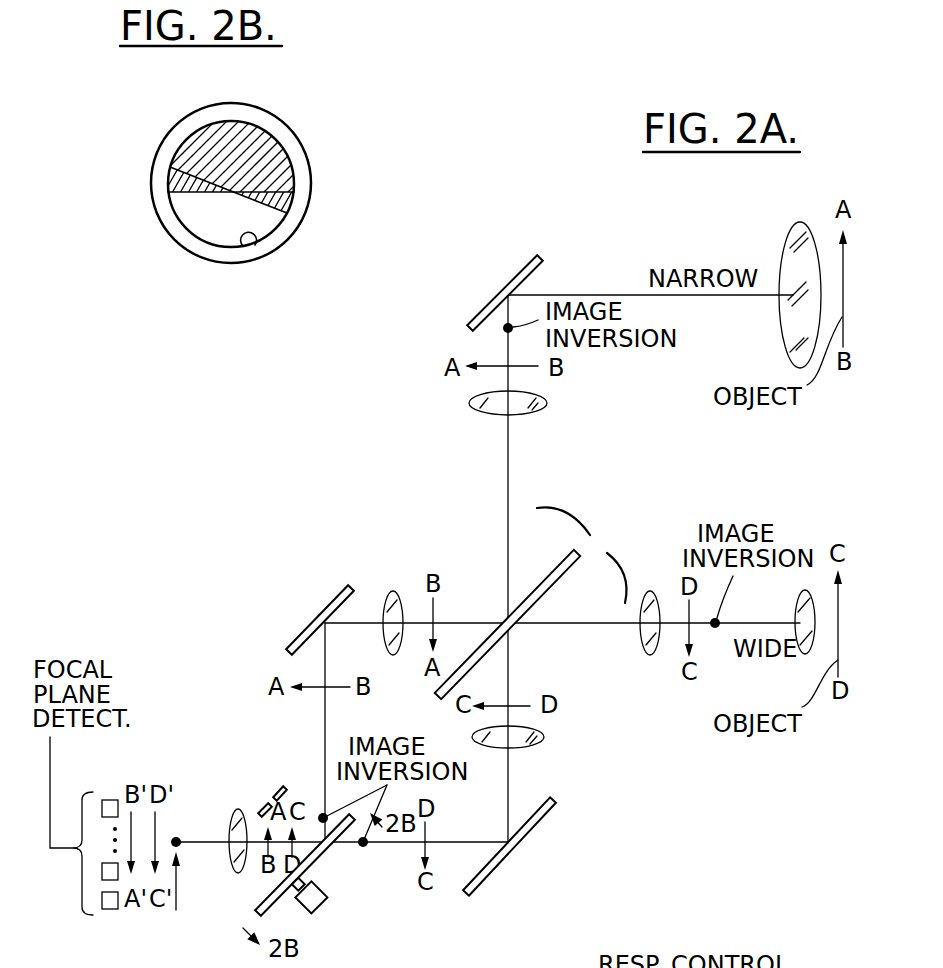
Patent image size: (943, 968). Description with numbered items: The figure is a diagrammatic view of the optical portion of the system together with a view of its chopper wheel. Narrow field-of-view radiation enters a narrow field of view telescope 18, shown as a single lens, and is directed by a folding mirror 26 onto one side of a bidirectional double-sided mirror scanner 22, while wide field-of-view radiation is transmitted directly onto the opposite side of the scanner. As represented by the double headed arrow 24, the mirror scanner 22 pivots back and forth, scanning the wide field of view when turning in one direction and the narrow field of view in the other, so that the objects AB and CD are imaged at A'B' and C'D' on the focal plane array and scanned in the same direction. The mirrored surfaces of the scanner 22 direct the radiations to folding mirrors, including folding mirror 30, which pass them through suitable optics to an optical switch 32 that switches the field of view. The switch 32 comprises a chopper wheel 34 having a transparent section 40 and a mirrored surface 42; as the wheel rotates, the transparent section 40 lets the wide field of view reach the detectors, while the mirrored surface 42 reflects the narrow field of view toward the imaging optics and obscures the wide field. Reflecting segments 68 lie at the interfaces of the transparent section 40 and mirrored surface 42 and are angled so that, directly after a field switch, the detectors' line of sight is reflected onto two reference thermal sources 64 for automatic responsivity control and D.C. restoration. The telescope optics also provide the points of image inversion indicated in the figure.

In FIG. 2A, the narrow field of view telescope 18 is at (788, 237).
In FIG. 2A, the bidirectional double-sided mirror scanner 22 is at (545, 578).
In FIG. 2A, the double headed arrow 24 is at (590, 514).
In FIG. 2A, the folding mirror 26 is at (514, 278).
In FIG. 2A, the folding mirror 30 is at (547, 824).
In FIG. 2B, the optical switch 32 is at (236, 218).
In FIG. 2A, the optical switch 32 is at (328, 885).
In FIG. 2B, the chopper wheel 34 is at (302, 230).
In FIG. 2A, the chopper wheel 34 is at (262, 905).
In FIG. 2B, the transparent section 40 is at (276, 269).
In FIG. 2B, the mirrored surface 42 is at (277, 143).
In FIG. 2A, the reference thermal sources 64 is at (278, 791).
In FIG. 2B, the reflecting segments 68 is at (168, 181).